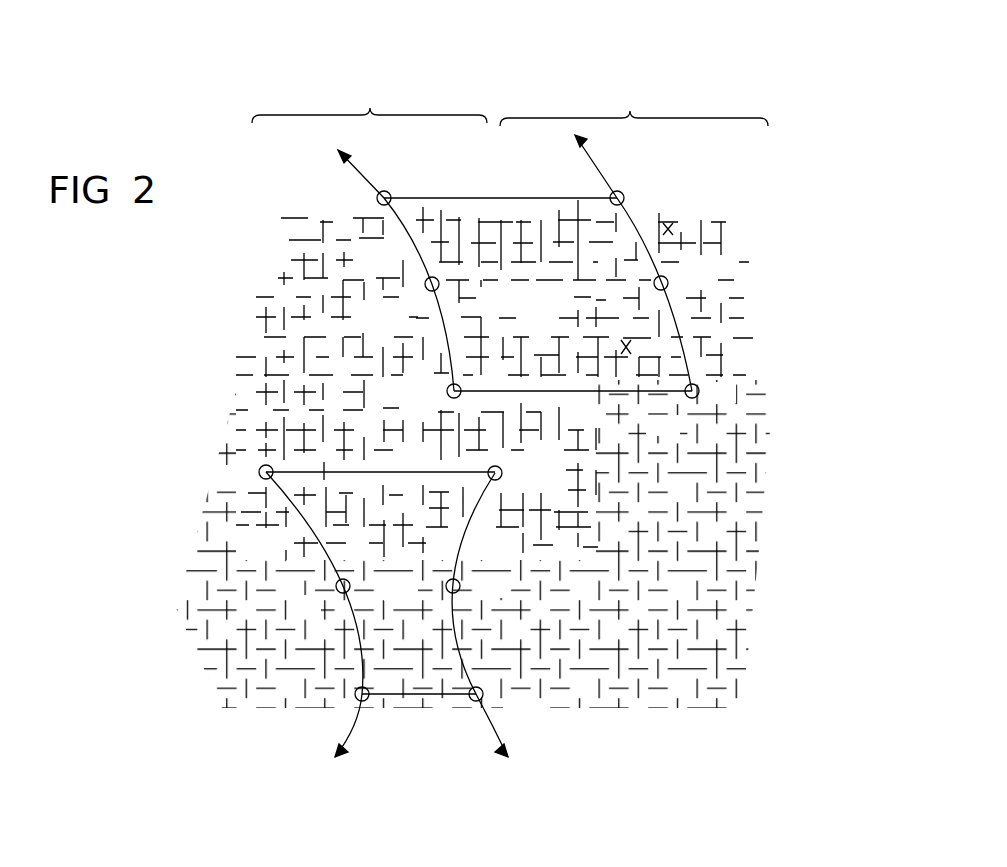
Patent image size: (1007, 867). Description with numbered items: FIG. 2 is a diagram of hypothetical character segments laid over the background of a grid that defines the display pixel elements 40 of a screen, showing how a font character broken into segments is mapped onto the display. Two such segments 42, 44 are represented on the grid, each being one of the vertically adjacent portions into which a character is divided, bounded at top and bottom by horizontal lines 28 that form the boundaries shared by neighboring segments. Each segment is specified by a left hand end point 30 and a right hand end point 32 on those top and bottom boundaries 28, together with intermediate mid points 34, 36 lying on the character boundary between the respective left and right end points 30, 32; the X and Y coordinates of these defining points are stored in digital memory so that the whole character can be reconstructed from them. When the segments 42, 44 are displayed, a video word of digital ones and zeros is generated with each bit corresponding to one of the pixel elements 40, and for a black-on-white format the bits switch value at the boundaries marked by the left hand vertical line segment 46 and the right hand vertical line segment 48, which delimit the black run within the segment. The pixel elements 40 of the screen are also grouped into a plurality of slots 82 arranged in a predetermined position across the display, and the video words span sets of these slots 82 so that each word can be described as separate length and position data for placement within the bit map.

The horizontal lines 28 is at (493, 198).
The left hand end point 30 is at (389, 193).
The right hand end point 32 is at (624, 195).
The intermediate mid point 34 is at (427, 291).
The intermediate mid point 36 is at (668, 279).
The pixel elements 40 is at (671, 224).
The segment 42 is at (522, 311).
The segment 44 is at (387, 598).
The left hand vertical line segment 46 is at (411, 242).
The right hand vertical line segment 48 is at (456, 540).
The slots 82 is at (510, 106).